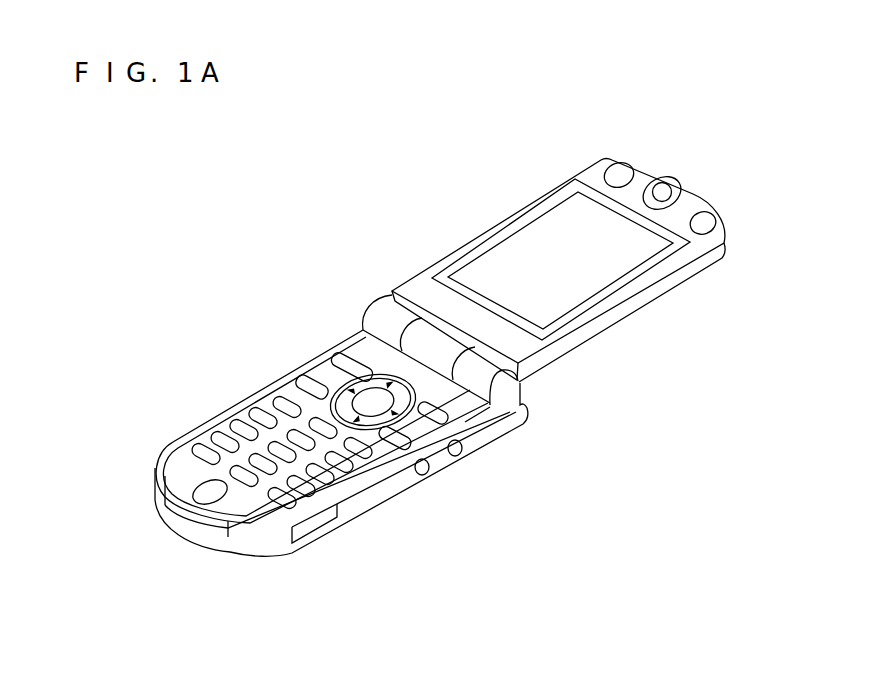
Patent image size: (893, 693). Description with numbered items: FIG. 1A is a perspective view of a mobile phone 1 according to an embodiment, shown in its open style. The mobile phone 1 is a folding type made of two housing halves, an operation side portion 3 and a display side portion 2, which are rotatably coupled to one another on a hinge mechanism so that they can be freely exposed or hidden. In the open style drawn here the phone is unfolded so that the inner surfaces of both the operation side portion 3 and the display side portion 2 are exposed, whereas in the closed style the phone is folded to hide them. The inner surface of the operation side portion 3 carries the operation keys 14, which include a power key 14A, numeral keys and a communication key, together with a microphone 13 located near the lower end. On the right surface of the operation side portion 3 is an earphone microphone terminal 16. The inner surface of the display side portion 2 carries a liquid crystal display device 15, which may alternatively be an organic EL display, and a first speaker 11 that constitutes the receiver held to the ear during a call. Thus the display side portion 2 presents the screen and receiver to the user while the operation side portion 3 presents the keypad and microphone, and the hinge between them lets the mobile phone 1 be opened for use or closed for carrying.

The mobile phone 1 is at (231, 174).
The display side portion 2 is at (558, 239).
The operation side portion 3 is at (341, 443).
The first speaker 11 is at (668, 188).
The microphone 13 is at (218, 489).
The operation keys 14 is at (312, 447).
The power key 14A is at (373, 453).
The liquid crystal display (LCD) device 15 is at (521, 244).
The earphone microphone terminal 16 is at (463, 455).